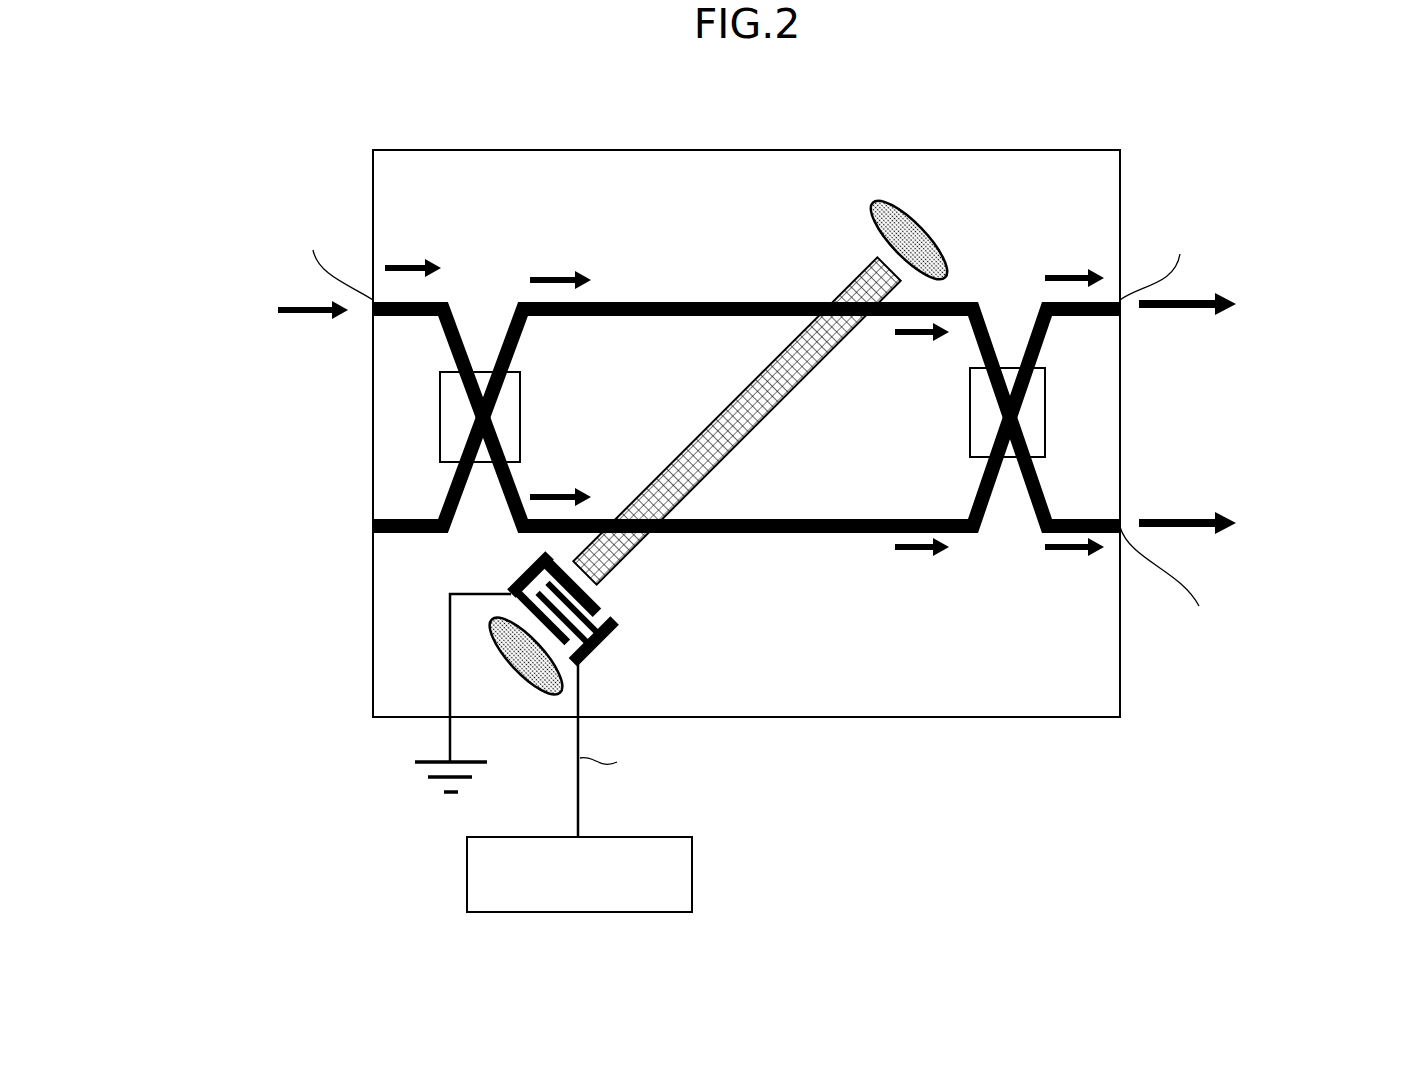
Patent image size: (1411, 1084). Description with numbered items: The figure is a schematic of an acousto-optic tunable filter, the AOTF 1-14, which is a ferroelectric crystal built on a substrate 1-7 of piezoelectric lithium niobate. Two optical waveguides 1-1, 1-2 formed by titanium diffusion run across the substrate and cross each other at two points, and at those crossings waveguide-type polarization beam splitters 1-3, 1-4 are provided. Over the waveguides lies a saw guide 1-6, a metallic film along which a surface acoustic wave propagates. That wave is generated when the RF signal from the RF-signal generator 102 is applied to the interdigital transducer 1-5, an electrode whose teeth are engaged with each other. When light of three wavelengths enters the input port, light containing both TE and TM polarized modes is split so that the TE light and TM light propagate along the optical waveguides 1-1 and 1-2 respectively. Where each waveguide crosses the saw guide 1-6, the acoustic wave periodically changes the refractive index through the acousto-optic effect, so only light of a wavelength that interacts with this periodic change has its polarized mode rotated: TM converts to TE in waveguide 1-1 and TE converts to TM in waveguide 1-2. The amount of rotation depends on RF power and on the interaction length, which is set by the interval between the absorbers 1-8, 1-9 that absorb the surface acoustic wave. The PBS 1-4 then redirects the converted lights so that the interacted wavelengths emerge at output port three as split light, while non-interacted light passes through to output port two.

The optical waveguide 1-1 is at (420, 320).
The optical waveguide 1-2 is at (1100, 512).
The polarization beam splitter 1-3 is at (520, 400).
The polarization beam splitter 1-4 is at (968, 435).
The interdigital transducer 1-5 is at (618, 630).
The saw guide 1-6 is at (863, 268).
The substrate 1-7 is at (677, 178).
The absorber 1-8 is at (915, 222).
The absorber 1-9 is at (542, 690).
The AOTF 1-14 is at (1050, 150).
The RF-signal generator 102 is at (693, 855).